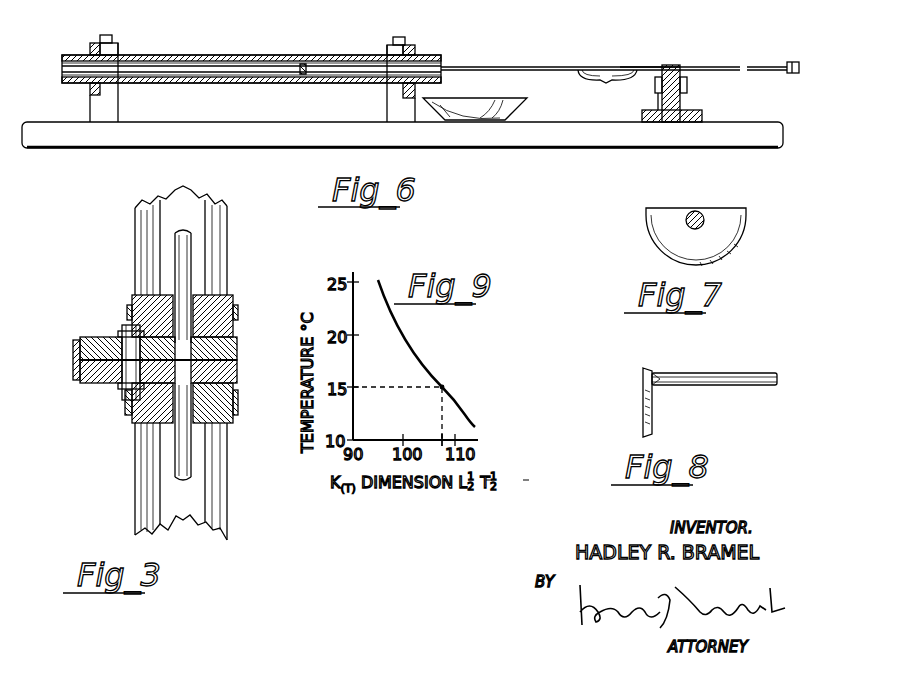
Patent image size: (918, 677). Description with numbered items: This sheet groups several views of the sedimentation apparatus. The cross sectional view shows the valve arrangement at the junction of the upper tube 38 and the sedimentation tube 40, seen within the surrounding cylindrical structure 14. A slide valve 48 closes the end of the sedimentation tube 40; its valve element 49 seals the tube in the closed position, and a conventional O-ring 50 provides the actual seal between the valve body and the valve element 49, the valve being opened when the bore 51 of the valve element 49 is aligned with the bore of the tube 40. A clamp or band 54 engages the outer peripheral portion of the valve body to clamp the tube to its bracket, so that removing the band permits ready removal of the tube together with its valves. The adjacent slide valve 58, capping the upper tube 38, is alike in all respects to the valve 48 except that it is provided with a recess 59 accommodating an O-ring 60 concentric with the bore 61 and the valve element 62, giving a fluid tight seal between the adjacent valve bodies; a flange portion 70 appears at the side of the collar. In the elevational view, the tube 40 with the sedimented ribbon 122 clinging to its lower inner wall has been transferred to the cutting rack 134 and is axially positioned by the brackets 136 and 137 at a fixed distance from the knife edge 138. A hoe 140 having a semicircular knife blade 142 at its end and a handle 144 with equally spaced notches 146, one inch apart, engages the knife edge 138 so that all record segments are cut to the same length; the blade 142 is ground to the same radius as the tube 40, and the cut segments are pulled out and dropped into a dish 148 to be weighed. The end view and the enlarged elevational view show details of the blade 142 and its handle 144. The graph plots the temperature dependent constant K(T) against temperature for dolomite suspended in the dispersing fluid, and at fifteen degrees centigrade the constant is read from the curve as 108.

In FIG. 3, the outer cylinder 14 is at (228, 500).
In FIG. 3, the upper tube 38 is at (193, 233).
In FIG. 6, the sedimentation tube 40 is at (219, 57).
In FIG. 3, the sedimentation tube 40 is at (193, 478).
In FIG. 3, the slide valve 48 is at (225, 416).
In FIG. 3, the valve element 49 is at (238, 372).
In FIG. 3, the O-ring 50 is at (167, 393).
In FIG. 3, the bore 51 is at (125, 389).
In FIG. 3, the clamp or band 54 is at (238, 411).
In FIG. 3, the slide valve 58 is at (228, 297).
In FIG. 3, the recess 59 is at (118, 345).
In FIG. 3, the O-ring 60 is at (100, 382).
In FIG. 3, the bore 61 is at (127, 332).
In FIG. 3, the valve element 62 is at (238, 345).
In FIG. 3, the upper collar flange 70 is at (237, 313).
In FIG. 9, the K(T) value 108 is at (440, 432).
In FIG. 6, the ribbon 122 is at (228, 72).
In FIG. 6, the cutting rack 134 is at (343, 125).
In FIG. 6, the bracket 136 is at (405, 46).
In FIG. 6, the bracket 137 is at (112, 45).
In FIG. 6, the knife edge 138 is at (680, 67).
In FIG. 6, the hoe 140 is at (465, 64).
In FIG. 6, the semicircular knife blade 142 is at (303, 64).
In FIG. 7, the semicircular knife blade 142 is at (648, 236).
In FIG. 8, the semicircular knife blade 142 is at (643, 411).
In FIG. 6, the handle 144 is at (630, 66).
In FIG. 7, the handle 144 is at (697, 212).
In FIG. 8, the handle 144 is at (704, 386).
In FIG. 6, the notches 146 is at (604, 83).
In FIG. 6, the dish 148 is at (472, 108).